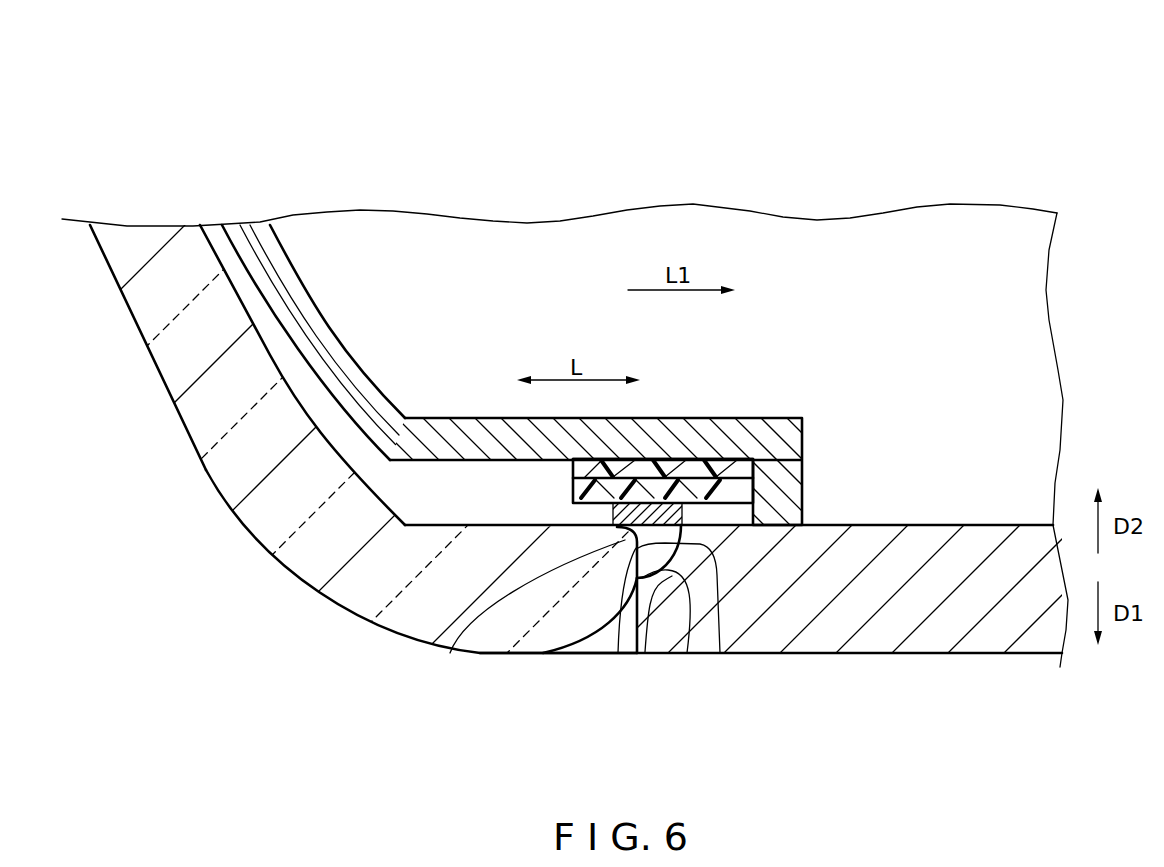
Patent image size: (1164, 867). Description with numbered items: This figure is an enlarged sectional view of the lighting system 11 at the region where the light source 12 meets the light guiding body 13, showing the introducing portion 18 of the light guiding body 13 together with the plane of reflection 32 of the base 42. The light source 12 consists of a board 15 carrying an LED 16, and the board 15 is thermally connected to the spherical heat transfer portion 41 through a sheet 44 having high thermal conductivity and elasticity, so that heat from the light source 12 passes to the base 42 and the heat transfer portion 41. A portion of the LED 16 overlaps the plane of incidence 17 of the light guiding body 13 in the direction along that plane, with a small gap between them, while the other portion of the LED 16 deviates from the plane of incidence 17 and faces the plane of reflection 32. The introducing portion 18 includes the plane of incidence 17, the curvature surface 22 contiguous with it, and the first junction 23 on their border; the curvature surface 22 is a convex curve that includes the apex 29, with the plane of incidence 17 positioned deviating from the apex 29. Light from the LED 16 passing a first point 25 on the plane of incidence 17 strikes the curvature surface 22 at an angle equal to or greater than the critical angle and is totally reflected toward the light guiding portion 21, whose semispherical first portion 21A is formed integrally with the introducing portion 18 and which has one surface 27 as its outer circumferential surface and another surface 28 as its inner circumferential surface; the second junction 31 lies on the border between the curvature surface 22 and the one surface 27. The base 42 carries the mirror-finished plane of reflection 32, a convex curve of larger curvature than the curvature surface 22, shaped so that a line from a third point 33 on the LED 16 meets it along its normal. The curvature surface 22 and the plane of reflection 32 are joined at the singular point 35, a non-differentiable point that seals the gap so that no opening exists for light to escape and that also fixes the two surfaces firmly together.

The lighting system 11 is at (898, 104).
The light source 12 is at (553, 481).
The light guiding body 13 is at (293, 592).
The board 15 is at (707, 487).
The LED 16 is at (683, 512).
The plane of incidence 17 is at (610, 522).
The introducing portion 18 is at (520, 633).
The light guiding portion 21 is at (425, 439).
The first portion 21A is at (153, 322).
The curvature surface 22 is at (618, 653).
The first junction 23 is at (585, 639).
The first point 25 is at (452, 654).
The one surface 27 is at (200, 447).
The another surface 28 is at (260, 337).
The apex 29 is at (720, 655).
The second junction 31 is at (482, 655).
The plane of reflection 32 is at (687, 655).
The third point 33 is at (637, 545).
The singular point 35 is at (646, 655).
The heat transfer portion 41 is at (464, 456).
The base 42 is at (822, 627).
The sheet 44 is at (688, 472).